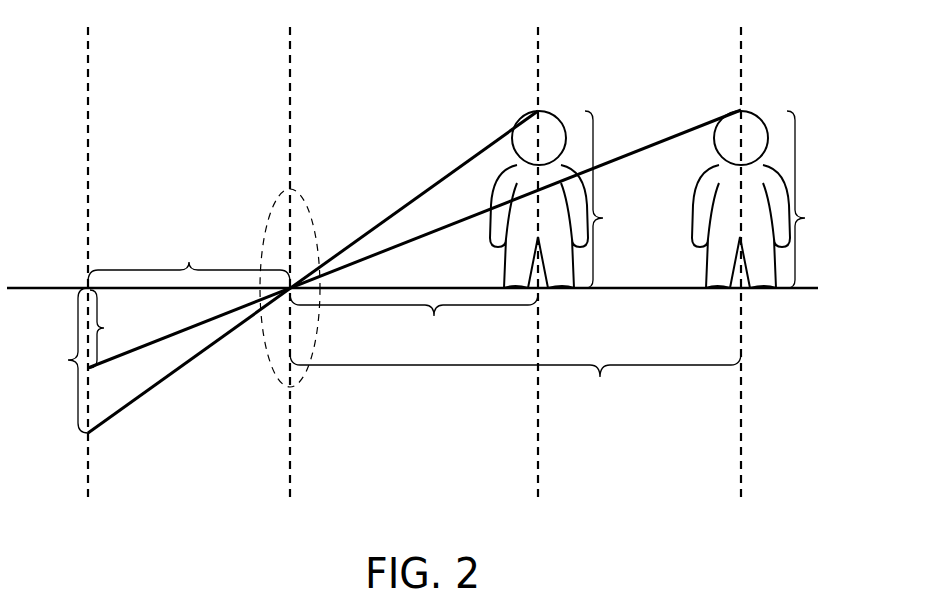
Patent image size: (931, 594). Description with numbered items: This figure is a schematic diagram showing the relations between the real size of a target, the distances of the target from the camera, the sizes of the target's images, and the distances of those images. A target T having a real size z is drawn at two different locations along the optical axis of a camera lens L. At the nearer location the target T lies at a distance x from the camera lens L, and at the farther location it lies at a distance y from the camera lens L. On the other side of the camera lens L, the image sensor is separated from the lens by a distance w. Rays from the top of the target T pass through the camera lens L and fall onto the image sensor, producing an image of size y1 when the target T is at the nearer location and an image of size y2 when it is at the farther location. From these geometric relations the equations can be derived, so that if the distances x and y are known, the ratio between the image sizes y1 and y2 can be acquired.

The target T is at (549, 122).
The camera lens L is at (275, 202).
The distance between the image sensor and the camera lens w is at (189, 251).
The distance between the camera lens and the target x is at (414, 329).
The distance between the camera lens and the target y is at (515, 389).
The image size for the target y1 is at (59, 360).
The image size for the target y2 is at (117, 329).
The real size of the target z is at (707, 199).